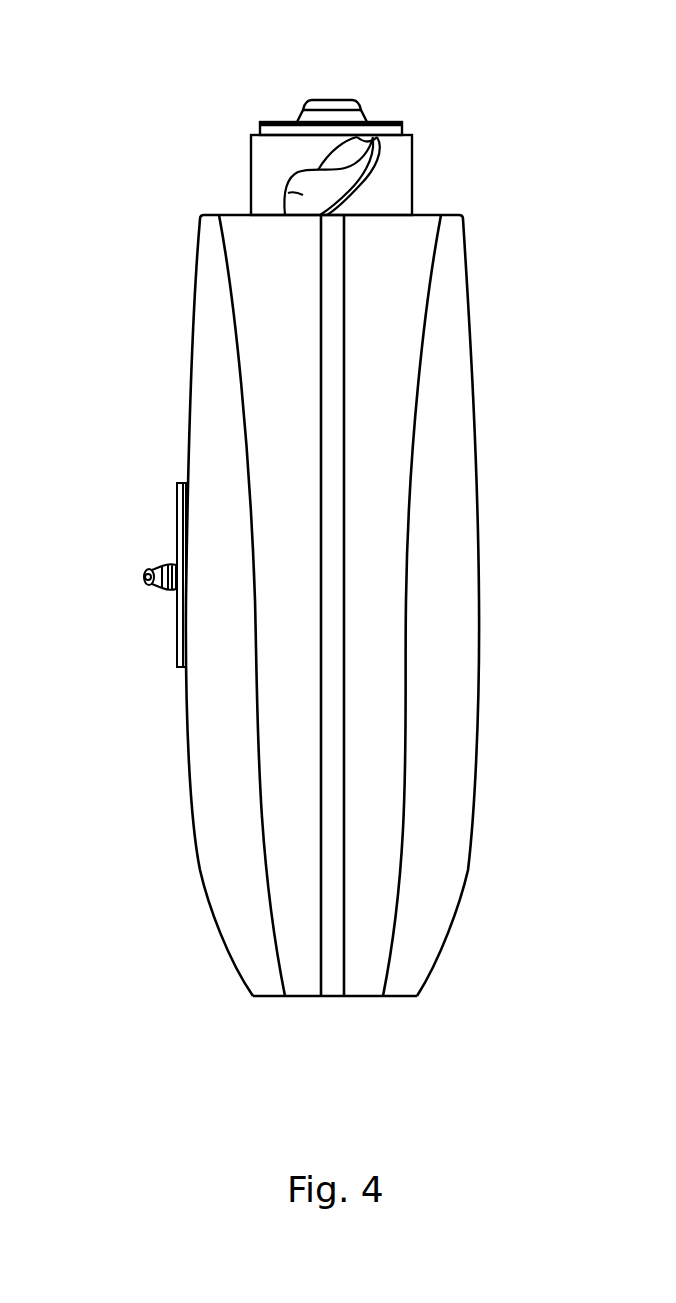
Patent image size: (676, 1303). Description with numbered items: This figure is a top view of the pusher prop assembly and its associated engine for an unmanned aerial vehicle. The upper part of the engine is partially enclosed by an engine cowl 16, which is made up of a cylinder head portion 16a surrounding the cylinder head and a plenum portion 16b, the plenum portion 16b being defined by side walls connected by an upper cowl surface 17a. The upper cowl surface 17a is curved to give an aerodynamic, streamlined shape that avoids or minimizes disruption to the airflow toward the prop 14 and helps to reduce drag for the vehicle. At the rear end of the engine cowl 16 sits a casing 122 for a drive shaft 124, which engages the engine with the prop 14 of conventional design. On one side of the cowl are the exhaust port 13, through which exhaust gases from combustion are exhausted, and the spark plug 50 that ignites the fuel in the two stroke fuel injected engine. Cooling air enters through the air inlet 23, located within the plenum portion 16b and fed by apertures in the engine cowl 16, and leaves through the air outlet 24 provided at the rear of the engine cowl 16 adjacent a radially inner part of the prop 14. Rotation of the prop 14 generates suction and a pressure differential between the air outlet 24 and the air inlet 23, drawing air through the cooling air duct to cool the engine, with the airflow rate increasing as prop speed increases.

The exhaust port 13 is at (178, 513).
The prop 14 is at (303, 195).
The engine cowl 16 is at (200, 880).
The cylinder head portion 16a is at (183, 723).
The plenum portion 16b is at (238, 935).
The upper cowl surface 17a is at (378, 796).
The air inlet 23 is at (350, 996).
The air outlet 24 is at (425, 210).
The spark plug 50 is at (143, 578).
The casing 122 is at (251, 160).
The drive shaft 124 is at (330, 98).